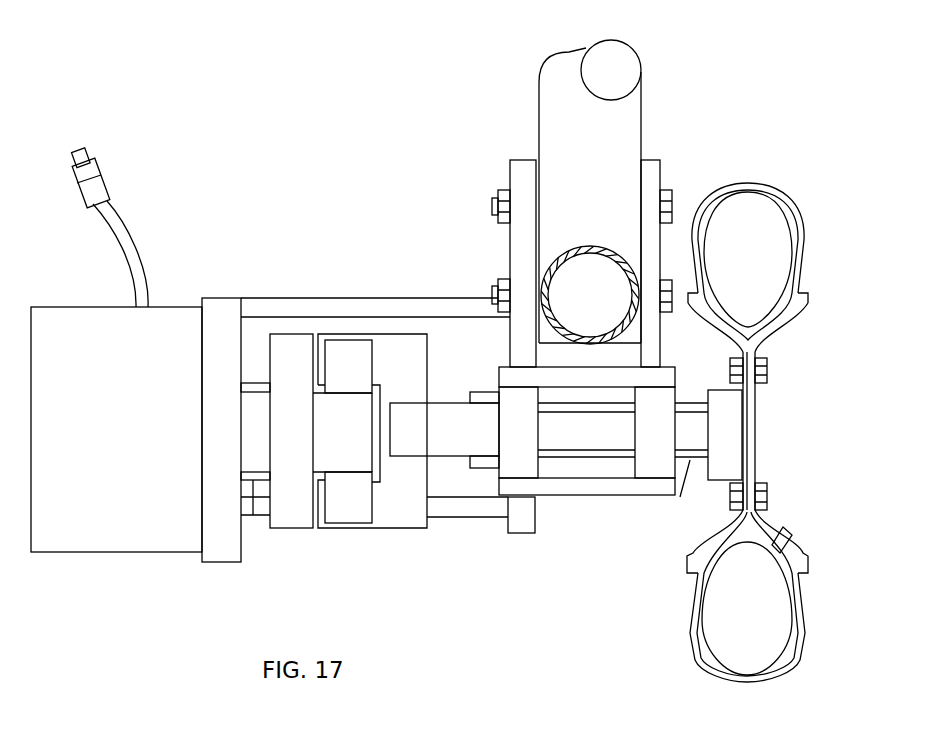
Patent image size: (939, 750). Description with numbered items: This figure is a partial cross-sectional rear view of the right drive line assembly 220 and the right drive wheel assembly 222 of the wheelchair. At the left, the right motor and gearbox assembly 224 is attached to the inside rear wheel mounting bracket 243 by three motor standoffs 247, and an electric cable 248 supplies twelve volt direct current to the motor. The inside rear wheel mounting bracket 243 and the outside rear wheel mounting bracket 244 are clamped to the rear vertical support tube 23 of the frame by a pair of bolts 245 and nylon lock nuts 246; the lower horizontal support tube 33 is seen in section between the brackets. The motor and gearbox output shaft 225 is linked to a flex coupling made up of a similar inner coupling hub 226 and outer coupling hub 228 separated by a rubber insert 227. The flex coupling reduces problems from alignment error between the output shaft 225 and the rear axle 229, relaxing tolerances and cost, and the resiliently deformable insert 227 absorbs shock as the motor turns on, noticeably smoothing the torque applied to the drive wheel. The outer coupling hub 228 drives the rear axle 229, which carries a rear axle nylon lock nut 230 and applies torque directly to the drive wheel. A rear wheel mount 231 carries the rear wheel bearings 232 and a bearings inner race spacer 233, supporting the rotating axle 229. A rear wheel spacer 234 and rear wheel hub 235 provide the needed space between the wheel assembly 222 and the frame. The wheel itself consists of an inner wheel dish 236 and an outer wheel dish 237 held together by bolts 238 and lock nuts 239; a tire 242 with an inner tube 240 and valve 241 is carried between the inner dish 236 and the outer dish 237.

The rear vertical support tube 23 is at (582, 123).
The lower horizontal support tube 33 is at (558, 252).
The right drive line assembly 220 is at (283, 233).
The right drive wheel assembly 222 is at (335, 188).
The right motor and gearbox assembly 224 is at (115, 467).
The motor and gearbox output shaft 225 is at (253, 515).
The inner coupling hub 226 is at (299, 483).
The insert 227 is at (350, 490).
The outer coupling hub 228 is at (403, 487).
The rear axle 229 is at (443, 462).
The rear axle nylon lock nut 230 is at (482, 462).
The rear wheel mount 231 is at (555, 477).
The rear wheel bearings 232 is at (652, 463).
The bearings inner race spacer 233 is at (587, 457).
The rear wheel spacer 234 is at (666, 493).
The rear wheel hub 235 is at (725, 405).
The inner wheel dish 236 is at (745, 405).
The outer wheel dish 237 is at (756, 425).
The bolts 238 is at (768, 483).
The lock nuts 239 is at (728, 498).
The inner tube 240 is at (792, 600).
The valve 241 is at (790, 523).
The tire 242 is at (807, 623).
The inside rear wheel mounting bracket 243 is at (518, 178).
The outside rear wheel mounting bracket 244 is at (652, 170).
The bolts 245 is at (667, 190).
The nylon lock nuts 246 is at (492, 204).
The motor standoffs 247 is at (297, 307).
The electric cable 248 is at (122, 244).